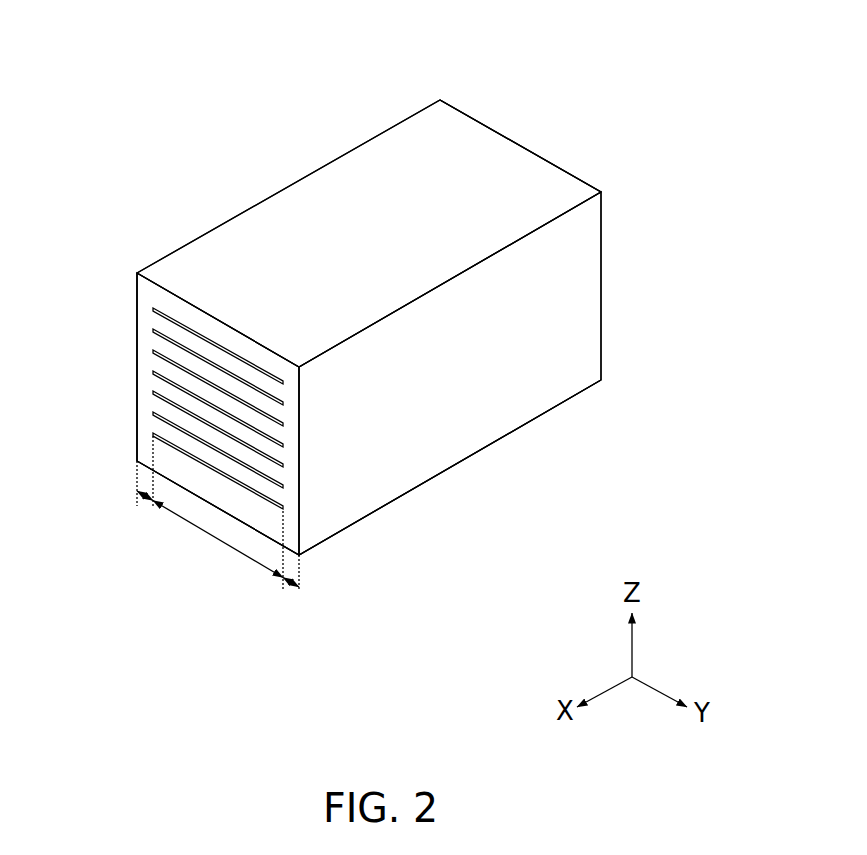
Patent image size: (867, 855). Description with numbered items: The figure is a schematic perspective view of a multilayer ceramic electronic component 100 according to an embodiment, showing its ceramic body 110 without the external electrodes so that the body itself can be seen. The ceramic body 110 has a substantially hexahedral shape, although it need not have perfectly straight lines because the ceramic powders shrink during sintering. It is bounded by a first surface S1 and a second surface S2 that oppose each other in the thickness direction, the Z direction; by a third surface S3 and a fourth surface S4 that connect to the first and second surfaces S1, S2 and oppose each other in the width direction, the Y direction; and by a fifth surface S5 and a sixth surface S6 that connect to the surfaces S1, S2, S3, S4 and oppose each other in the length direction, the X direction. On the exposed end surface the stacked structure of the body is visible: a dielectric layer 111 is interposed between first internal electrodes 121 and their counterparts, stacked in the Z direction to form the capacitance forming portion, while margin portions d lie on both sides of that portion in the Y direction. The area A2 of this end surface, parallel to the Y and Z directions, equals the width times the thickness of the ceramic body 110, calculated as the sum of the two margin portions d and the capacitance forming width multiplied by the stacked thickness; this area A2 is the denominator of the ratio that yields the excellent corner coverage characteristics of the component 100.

The multilayer ceramic electronic component 100 is at (128, 35).
The ceramic body 110 is at (303, 210).
The dielectric layer 111 is at (178, 336).
The first internal electrode 121 is at (162, 318).
The first surface S1 is at (373, 178).
The second surface S2 is at (415, 442).
The third surface S3 is at (563, 312).
The fourth surface S4 is at (240, 252).
The fifth surface S5 is at (197, 432).
The sixth surface S6 is at (520, 188).
The area of the end surface of the ceramic body A2 is at (196, 386).
The margin portion d is at (217, 526).